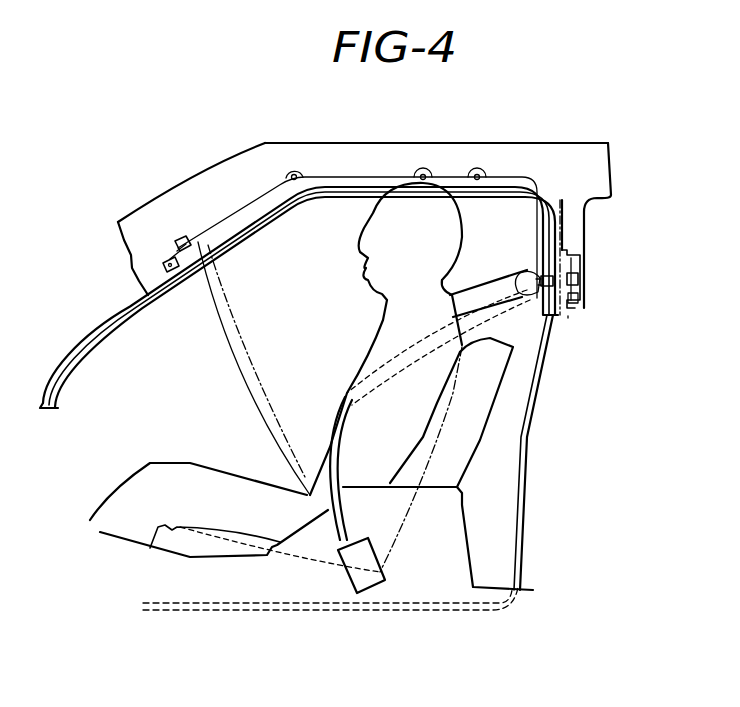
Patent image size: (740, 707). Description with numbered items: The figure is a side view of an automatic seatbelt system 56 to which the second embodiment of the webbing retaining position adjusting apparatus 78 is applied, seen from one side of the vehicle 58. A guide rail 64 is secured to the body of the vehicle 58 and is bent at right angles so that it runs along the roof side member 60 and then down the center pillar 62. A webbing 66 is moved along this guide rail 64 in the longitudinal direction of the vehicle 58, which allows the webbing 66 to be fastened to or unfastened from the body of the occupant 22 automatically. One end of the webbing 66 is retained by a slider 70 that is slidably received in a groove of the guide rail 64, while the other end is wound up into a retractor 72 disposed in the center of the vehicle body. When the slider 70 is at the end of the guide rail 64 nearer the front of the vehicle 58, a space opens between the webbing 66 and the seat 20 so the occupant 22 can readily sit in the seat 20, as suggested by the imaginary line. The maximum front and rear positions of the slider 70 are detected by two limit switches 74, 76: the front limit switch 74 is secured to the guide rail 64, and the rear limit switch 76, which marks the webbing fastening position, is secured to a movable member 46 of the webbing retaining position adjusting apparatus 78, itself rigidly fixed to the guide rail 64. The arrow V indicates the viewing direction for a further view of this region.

The seat 20 is at (505, 385).
The occupant 22 is at (368, 291).
The movable member 46 is at (582, 283).
The automatic seatbelt system 56 is at (563, 190).
The vehicle 58 is at (222, 160).
The roof side member 60 is at (410, 143).
The center pillar 62 is at (580, 237).
The guide rail 64 is at (496, 176).
The webbing 66 is at (333, 405).
The slider 70 is at (538, 270).
The retractor 72 is at (366, 600).
The limit switch 74 is at (183, 237).
The limit switch 76 is at (568, 317).
The webbing retaining position adjusting apparatus 78 is at (590, 275).
The view arrow V is at (593, 337).